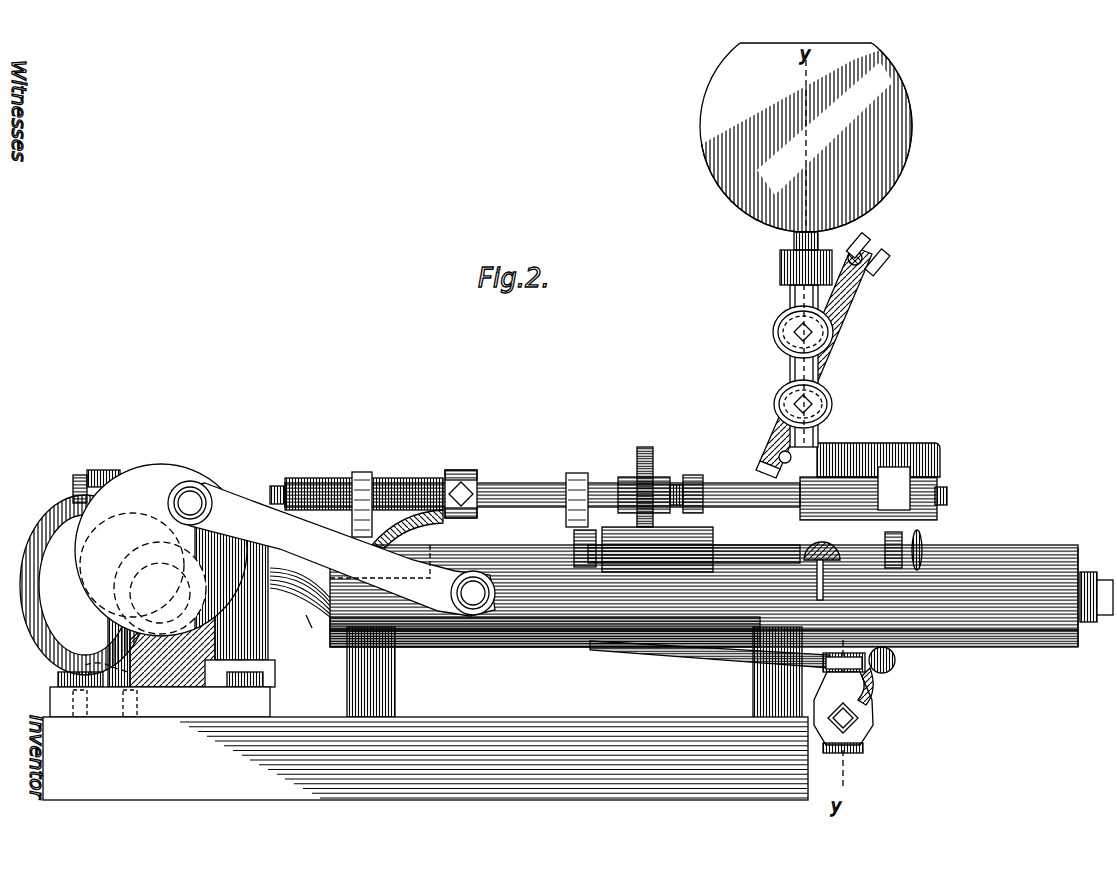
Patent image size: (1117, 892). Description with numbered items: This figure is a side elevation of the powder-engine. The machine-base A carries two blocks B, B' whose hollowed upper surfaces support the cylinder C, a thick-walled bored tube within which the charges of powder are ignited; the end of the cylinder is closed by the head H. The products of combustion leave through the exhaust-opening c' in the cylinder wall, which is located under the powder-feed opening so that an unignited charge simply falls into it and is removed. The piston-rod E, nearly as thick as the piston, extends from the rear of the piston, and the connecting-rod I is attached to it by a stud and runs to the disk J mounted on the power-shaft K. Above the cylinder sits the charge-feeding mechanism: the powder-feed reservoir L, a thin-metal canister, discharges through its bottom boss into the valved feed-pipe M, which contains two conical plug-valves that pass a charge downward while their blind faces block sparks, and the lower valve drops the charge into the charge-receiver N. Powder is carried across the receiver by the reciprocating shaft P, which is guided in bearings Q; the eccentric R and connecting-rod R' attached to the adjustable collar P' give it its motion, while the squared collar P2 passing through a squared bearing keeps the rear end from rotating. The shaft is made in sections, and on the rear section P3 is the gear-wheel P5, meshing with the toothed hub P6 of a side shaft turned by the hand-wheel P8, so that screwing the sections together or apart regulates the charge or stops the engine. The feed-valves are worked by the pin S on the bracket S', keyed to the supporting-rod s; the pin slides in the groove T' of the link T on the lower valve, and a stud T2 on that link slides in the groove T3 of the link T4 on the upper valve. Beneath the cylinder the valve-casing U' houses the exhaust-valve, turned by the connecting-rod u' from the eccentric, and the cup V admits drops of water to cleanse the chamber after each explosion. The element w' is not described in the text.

The machine-base A is at (490, 719).
The block B is at (380, 672).
The block B' is at (765, 673).
The cylinder C is at (482, 554).
The exhaust-opening c' is at (486, 571).
The piston-rod E is at (553, 640).
The head H is at (1088, 572).
The connecting-rod I is at (331, 548).
The disk J is at (165, 554).
The power-shaft K is at (137, 632).
The powder-feed reservoir L is at (903, 169).
The valved feed-pipe M is at (787, 339).
The charge-receiver N is at (867, 493).
The reciprocating shaft P is at (535, 480).
The adjustable collar P' is at (461, 479).
The squared collar P2 is at (395, 488).
The shaft section P3 is at (694, 537).
The gear-wheel P5 is at (653, 470).
The toothed hub P6 is at (662, 576).
The hand-wheel P8 is at (906, 550).
The bearing Q is at (362, 478).
The eccentric R is at (85, 585).
The connecting-rod R' is at (356, 580).
The pin S is at (757, 466).
The bracket S' is at (878, 447).
The supporting-rod s is at (947, 497).
The link T is at (832, 320).
The groove T' is at (776, 428).
The stud T2 is at (880, 268).
The groove T3 is at (862, 258).
The link T4 is at (864, 242).
The valve-casing U' is at (858, 715).
The connecting-rod u' is at (310, 626).
The cup V is at (828, 547).
The wedge w' is at (710, 656).